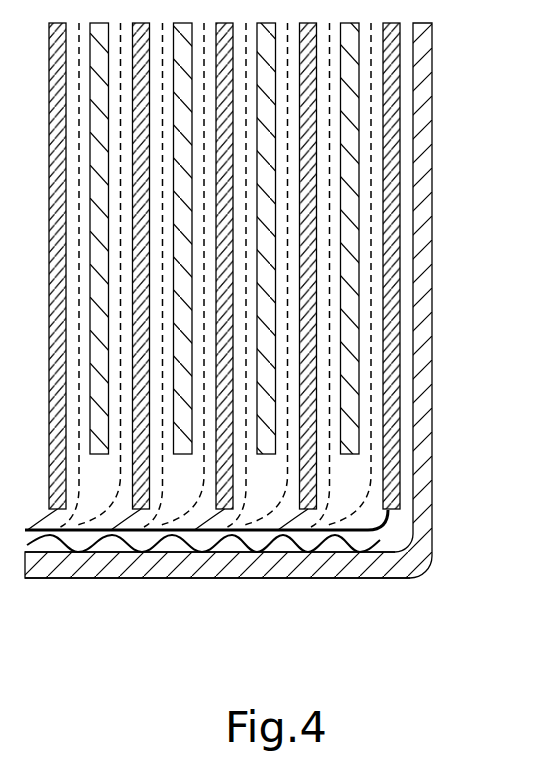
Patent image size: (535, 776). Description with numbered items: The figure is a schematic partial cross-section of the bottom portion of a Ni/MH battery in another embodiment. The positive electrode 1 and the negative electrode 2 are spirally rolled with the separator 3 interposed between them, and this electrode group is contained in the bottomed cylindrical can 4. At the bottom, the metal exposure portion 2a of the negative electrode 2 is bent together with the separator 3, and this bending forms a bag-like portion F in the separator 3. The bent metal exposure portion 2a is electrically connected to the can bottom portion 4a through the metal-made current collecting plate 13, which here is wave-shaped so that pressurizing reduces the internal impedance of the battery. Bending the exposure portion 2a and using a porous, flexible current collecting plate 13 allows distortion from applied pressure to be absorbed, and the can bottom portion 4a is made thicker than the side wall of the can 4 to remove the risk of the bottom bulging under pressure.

The positive electrode 1 is at (350, 312).
The negative electrode 2 is at (397, 370).
The metal exposure portion of the negative electrode 2a is at (367, 530).
The separator 3 is at (330, 153).
The bottomed cylindrical can 4 is at (420, 224).
The can bottom portion 4a is at (330, 562).
The metal-made current collecting plate 13 is at (235, 540).
The bag-like portion F is at (333, 524).